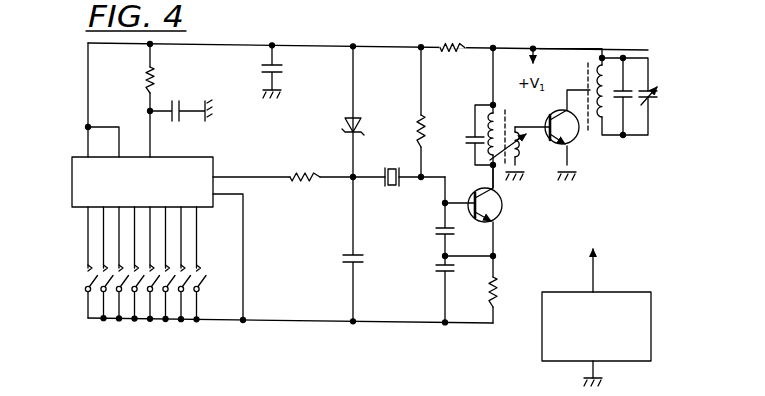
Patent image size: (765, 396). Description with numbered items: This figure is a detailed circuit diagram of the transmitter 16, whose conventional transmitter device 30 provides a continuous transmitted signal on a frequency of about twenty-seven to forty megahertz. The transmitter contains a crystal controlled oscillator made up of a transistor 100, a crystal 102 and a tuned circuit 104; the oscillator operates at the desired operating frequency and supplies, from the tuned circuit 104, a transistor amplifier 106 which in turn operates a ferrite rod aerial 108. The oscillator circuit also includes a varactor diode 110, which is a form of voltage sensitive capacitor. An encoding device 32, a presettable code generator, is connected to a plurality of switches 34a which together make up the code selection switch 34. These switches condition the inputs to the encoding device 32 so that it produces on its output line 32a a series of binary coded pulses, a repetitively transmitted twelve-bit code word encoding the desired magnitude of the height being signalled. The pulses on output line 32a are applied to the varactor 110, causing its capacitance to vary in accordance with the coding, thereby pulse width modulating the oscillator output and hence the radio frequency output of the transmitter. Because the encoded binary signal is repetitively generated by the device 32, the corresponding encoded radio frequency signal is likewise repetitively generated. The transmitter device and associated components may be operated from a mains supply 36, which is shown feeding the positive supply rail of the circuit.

The transmitter 16 is at (629, 203).
The transmitter device 30 is at (561, 43).
The encoding device 32 is at (205, 152).
The output line 32a is at (248, 177).
The code selection switch 34 is at (136, 278).
The switches 34a is at (178, 337).
The mains supply 36 is at (642, 327).
The transistor 100 is at (498, 213).
The crystal 102 is at (401, 166).
The tuned circuit 104 is at (508, 112).
The transistor amplifier 106 is at (568, 146).
The ferrite rod aerial 108 is at (598, 77).
The varactor diode 110 is at (355, 118).